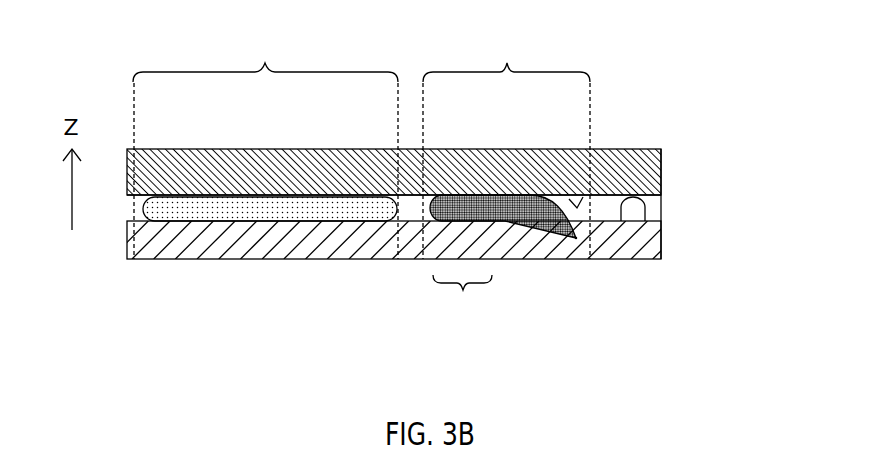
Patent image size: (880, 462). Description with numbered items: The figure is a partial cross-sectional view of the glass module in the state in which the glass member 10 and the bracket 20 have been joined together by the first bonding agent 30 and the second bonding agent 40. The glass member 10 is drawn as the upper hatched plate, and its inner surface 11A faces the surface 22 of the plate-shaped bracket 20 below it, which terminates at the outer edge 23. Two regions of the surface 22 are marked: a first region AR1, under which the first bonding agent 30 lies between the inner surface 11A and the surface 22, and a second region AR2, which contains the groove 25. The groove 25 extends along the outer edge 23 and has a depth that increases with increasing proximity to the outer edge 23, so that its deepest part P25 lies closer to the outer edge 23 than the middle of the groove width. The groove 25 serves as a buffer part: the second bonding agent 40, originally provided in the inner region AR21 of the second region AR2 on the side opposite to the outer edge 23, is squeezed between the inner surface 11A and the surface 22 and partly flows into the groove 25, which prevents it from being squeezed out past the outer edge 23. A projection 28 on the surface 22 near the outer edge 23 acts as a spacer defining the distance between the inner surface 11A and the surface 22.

The glass member 10 is at (272, 163).
The inner surface 11A is at (351, 195).
The bracket 20 is at (227, 245).
The surface 22 is at (307, 220).
The outer edge 23 is at (661, 238).
The groove 25 is at (577, 208).
The projection 28 is at (627, 212).
The first bonding agent 30 is at (173, 213).
The second bonding agent 40 is at (530, 233).
The deepest part P25 is at (576, 240).
The first region AR1 is at (265, 54).
The second region AR2 is at (506, 54).
The inner region AR21 is at (462, 300).